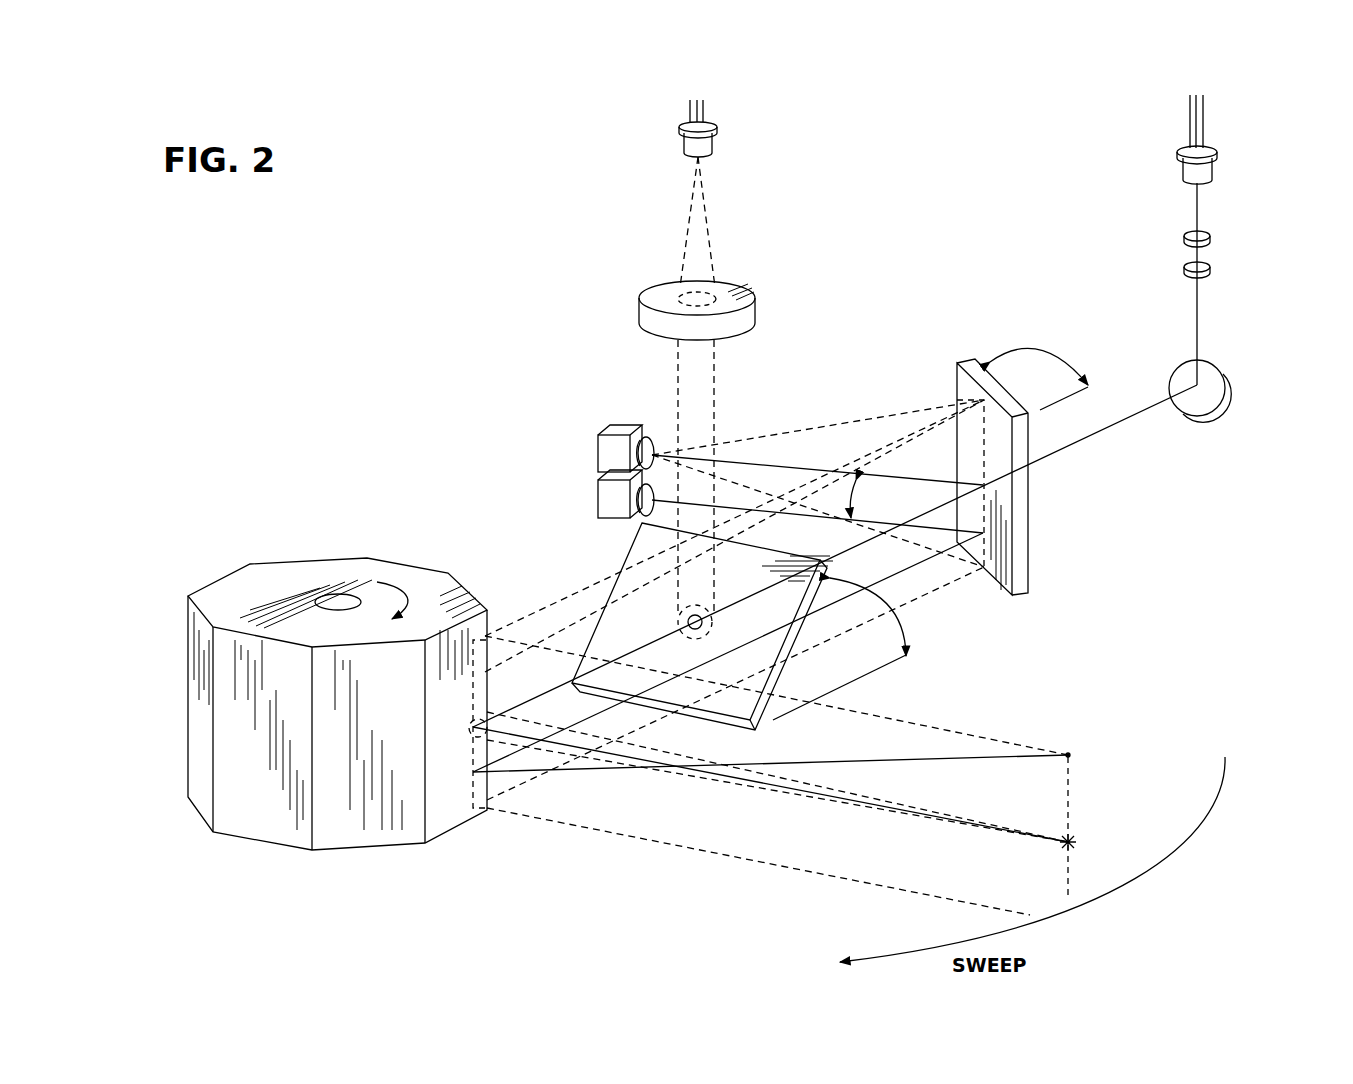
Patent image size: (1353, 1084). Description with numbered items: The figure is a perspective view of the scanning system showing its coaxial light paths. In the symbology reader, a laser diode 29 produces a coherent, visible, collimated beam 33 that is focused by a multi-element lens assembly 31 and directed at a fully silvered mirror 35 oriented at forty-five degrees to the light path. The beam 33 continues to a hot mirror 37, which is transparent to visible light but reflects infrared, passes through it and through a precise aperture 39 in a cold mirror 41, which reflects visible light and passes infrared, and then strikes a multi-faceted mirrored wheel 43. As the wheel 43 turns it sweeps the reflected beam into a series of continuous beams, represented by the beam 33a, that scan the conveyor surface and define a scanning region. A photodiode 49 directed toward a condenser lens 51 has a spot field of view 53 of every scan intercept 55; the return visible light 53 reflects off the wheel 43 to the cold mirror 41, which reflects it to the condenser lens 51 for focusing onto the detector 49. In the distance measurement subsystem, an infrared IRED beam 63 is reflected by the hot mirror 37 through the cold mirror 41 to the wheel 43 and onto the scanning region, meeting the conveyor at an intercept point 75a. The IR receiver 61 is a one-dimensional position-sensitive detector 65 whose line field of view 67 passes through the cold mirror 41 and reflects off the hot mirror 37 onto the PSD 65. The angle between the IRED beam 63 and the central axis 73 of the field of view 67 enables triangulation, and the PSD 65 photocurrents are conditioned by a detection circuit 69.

The laser diode 29 is at (1224, 148).
The focusing multi-element lens assembly 31 is at (1214, 237).
The laser beam 33 is at (1197, 203).
The continuous scanning beam 33a is at (748, 788).
The fully silvered mirror 35 is at (1232, 376).
The hot mirror 37 is at (1031, 501).
The aperture 39 is at (703, 625).
The cold mirror 41 is at (770, 600).
The multi-faceted mirrored wheel 43 is at (407, 556).
The photodiode 49 is at (677, 136).
The condenser lens 51 is at (639, 300).
The spot field of view 53 is at (700, 243).
The scan intercept 55 is at (1076, 842).
The IR receiver 61 is at (606, 448).
The IRED beam 63 is at (779, 516).
The position-sensitive detector 65 is at (649, 447).
The line field of view 67 is at (472, 684).
The detection circuit 69 is at (608, 497).
The central axis 73 is at (874, 472).
The intercept point 75a is at (1068, 754).